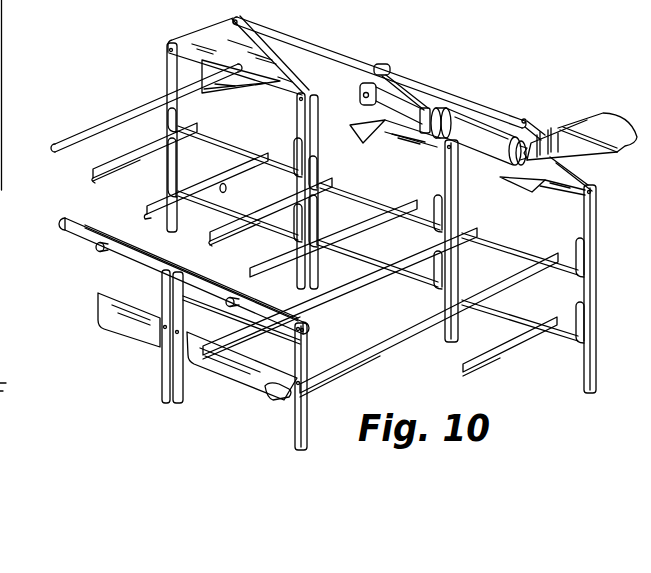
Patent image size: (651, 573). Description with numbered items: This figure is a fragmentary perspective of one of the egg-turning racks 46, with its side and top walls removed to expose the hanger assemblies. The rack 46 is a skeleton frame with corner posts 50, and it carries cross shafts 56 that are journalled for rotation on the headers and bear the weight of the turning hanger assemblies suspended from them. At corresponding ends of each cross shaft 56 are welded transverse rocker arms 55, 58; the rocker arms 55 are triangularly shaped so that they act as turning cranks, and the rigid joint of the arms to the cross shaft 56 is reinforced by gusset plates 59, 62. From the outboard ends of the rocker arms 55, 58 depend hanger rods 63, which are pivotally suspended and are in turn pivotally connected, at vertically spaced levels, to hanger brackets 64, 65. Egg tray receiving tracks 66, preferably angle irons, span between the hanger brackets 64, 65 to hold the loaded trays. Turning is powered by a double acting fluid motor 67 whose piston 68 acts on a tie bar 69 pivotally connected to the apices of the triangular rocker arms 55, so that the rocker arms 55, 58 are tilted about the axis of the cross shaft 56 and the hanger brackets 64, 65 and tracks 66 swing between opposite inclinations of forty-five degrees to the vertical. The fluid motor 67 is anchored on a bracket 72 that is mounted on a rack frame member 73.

The rack 46 is at (348, 52).
The corner post 50 is at (0, 58).
The rocker arm 55 is at (332, 78).
The cross shaft 56 is at (102, 133).
The rocker arm 58 is at (147, 231).
The gusset plate 59 is at (112, 232).
The gusset plate 62 is at (238, 83).
The hanger rod 63 is at (177, 164).
The hanger bracket 64 is at (231, 163).
The hanger bracket 65 is at (140, 327).
The egg tray receiving track 66 is at (112, 176).
The double acting fluid motor 67 is at (468, 127).
The piston 68 is at (400, 110).
The tie bar 69 is at (406, 82).
The bracket 72 is at (550, 138).
The rack frame member 73 is at (588, 123).